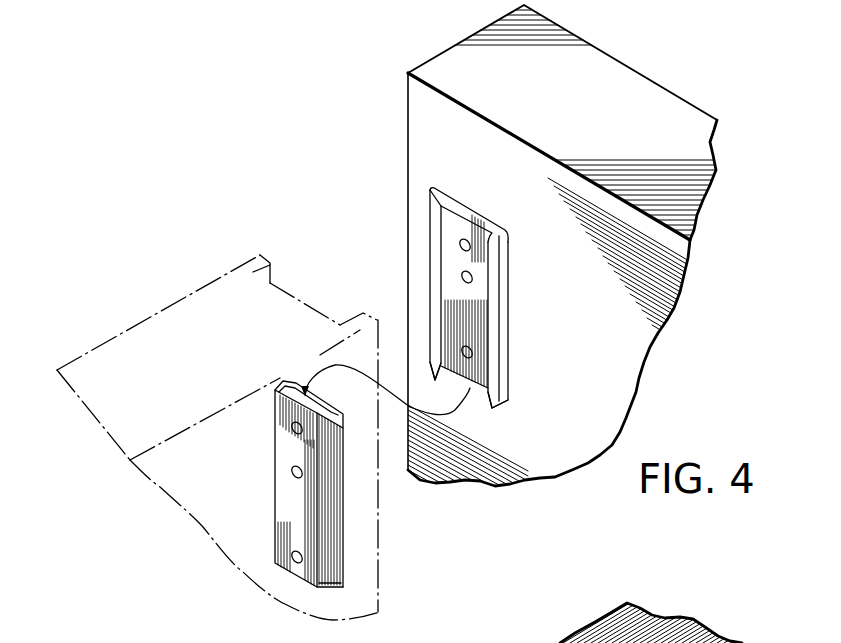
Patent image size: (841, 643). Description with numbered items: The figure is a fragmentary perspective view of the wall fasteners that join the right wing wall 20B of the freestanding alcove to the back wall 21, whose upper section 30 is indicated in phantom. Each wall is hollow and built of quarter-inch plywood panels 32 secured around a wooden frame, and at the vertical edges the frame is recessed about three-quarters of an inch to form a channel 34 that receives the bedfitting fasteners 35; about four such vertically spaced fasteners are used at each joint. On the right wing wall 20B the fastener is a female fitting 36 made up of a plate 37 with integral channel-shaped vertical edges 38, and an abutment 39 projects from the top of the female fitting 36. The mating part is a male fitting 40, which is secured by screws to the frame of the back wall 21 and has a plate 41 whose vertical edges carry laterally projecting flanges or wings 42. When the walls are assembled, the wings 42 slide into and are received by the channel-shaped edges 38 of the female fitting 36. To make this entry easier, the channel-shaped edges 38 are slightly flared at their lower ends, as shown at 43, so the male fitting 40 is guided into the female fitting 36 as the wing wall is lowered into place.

The right wing wall 20B is at (643, 86).
The back wall 21 is at (153, 311).
The upper section 30 is at (140, 483).
The plywood panels 32 is at (637, 374).
The channel 34 is at (282, 283).
The bedfitting fasteners 35 is at (455, 294).
The female fitting 36 is at (426, 227).
The plate 37 is at (474, 302).
The channel-shaped vertical edges 38 is at (495, 290).
The abutment 39 is at (492, 227).
The male fitting 40 is at (343, 479).
The plate 41 is at (286, 477).
The flanges or wings 42 is at (345, 563).
The flaring 43 is at (430, 366).